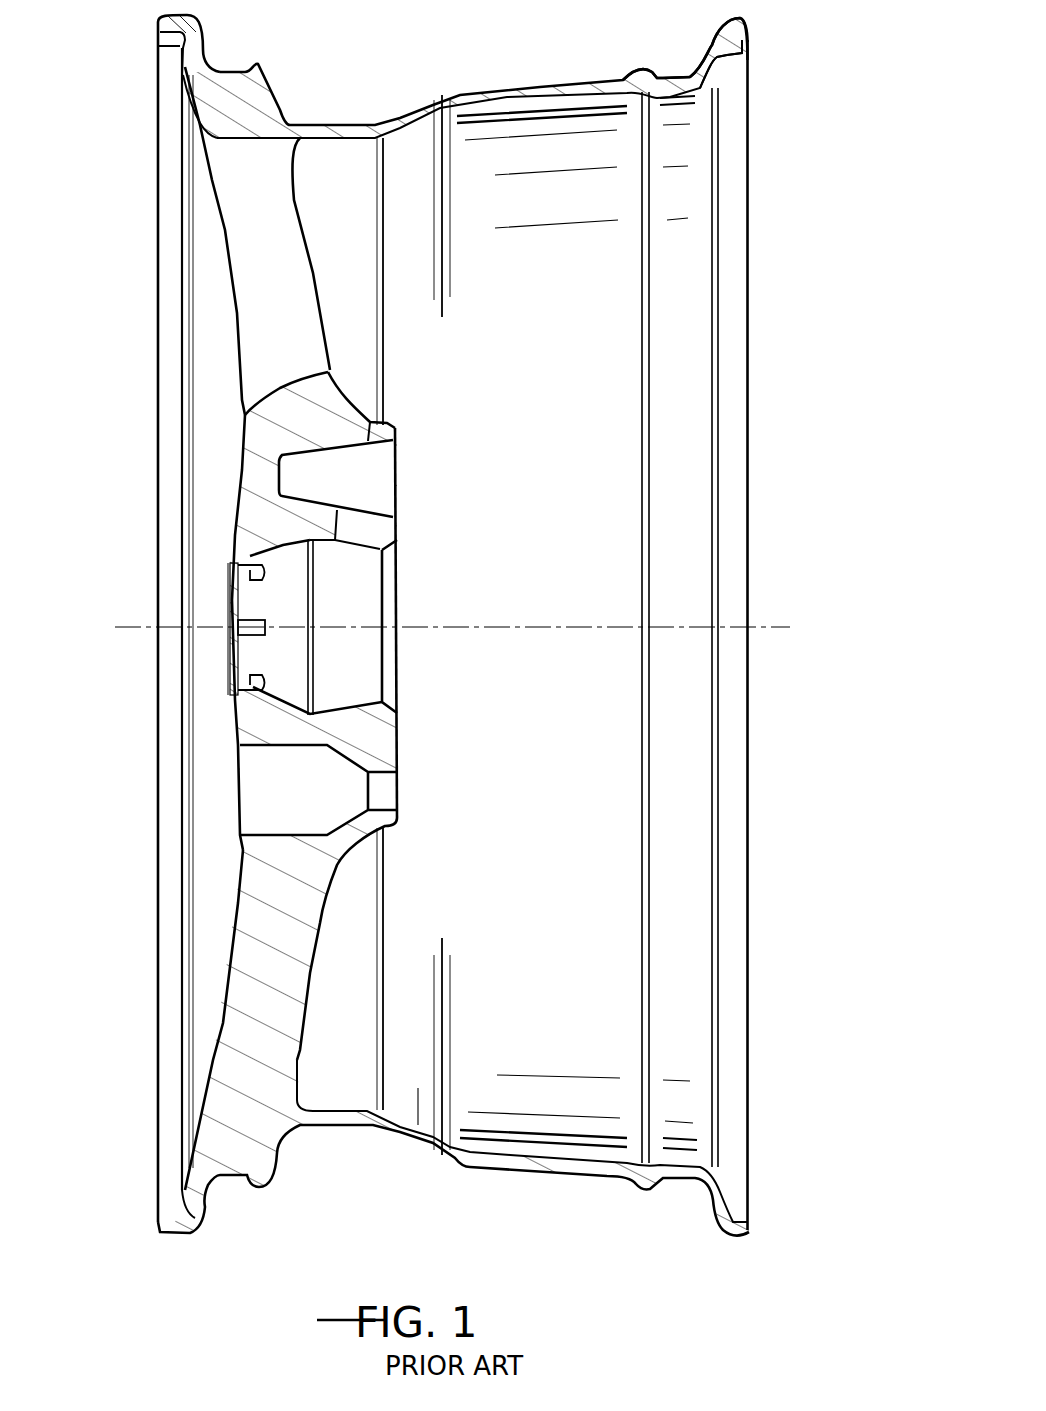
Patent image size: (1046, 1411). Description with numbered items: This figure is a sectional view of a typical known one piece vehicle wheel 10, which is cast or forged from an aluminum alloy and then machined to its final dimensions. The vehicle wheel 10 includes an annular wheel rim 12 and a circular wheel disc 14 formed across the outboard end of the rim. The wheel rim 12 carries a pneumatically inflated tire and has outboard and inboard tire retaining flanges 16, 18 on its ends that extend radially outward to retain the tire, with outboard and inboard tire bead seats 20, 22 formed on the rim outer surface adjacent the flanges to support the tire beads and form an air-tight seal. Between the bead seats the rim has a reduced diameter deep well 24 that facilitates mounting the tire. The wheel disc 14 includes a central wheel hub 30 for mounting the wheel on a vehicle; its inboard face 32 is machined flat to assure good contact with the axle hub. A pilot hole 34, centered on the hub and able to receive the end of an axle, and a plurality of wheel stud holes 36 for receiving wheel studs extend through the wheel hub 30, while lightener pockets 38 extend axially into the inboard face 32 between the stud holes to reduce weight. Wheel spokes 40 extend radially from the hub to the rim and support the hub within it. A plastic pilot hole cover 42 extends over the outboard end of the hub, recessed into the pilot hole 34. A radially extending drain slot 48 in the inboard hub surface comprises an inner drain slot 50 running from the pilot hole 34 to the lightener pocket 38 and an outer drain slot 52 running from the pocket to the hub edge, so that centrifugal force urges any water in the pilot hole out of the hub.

The vehicle wheel 10 is at (800, 168).
The wheel rim 12 is at (537, 338).
The wheel disc 14 is at (140, 443).
The outboard tire retaining flange 16 is at (158, 43).
The inboard tire retaining flange 18 is at (748, 50).
The outboard tire bead seat 20 is at (220, 74).
The inboard tire bead seat 22 is at (672, 77).
The deep well 24 is at (485, 1200).
The wheel hub 30 is at (484, 865).
The inboard face 32 is at (398, 735).
The pilot hole 34 is at (410, 609).
The wheel stud hole 36 is at (415, 788).
The lightener pocket 38 is at (412, 474).
The wheel spoke 40 is at (287, 283).
The pilot hole cover 42 is at (232, 653).
The drain slot 48 is at (533, 392).
The inner drain slot 50 is at (363, 527).
The outer drain slot 52 is at (392, 419).